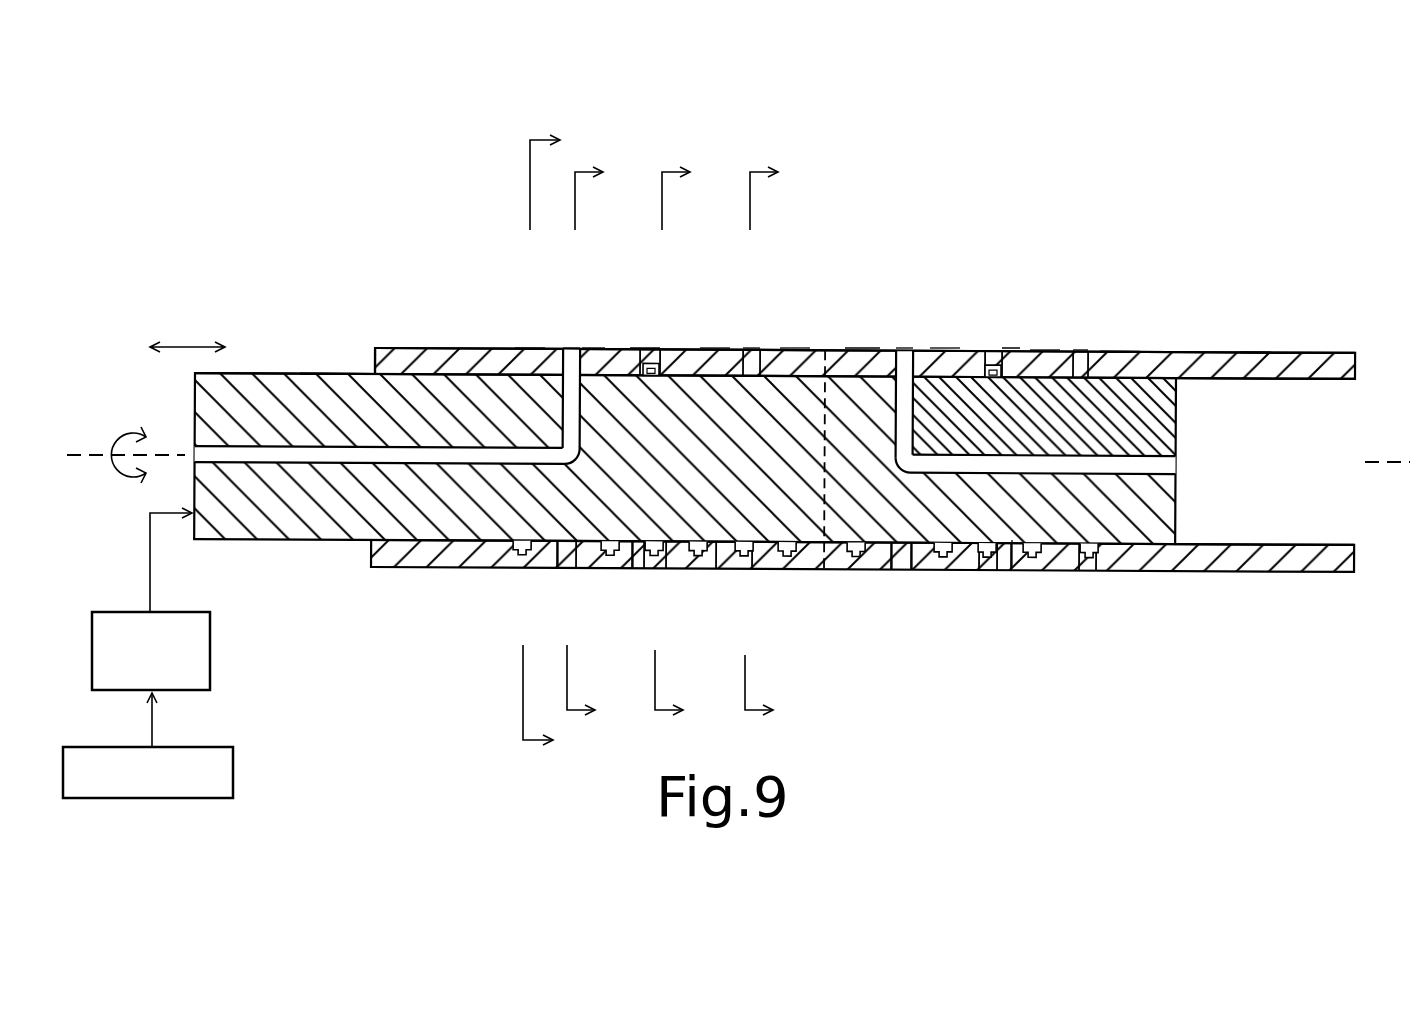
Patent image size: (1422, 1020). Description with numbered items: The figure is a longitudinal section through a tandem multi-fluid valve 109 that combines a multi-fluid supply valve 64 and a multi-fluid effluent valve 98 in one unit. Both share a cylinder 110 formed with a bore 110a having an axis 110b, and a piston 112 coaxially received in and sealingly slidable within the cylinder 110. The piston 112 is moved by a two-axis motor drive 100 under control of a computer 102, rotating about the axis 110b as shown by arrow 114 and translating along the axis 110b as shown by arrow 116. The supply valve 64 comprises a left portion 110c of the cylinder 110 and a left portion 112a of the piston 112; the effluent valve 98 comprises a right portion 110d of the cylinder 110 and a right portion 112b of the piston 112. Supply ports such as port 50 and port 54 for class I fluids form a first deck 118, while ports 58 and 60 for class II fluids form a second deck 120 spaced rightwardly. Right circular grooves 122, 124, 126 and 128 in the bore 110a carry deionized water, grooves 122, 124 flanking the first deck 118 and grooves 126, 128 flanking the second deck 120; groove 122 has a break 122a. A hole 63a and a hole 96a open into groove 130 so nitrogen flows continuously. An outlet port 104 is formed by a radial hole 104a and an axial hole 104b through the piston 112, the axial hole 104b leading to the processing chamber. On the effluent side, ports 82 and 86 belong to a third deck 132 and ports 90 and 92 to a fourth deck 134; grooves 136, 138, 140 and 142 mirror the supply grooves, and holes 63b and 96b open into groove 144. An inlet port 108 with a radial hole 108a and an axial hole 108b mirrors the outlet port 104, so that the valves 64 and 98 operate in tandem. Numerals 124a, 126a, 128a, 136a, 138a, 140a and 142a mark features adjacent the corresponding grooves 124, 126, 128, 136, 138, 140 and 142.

The supply port 50 is at (572, 348).
The supply port 54 is at (548, 567).
The supply port 58 is at (748, 348).
The supply port 60 is at (745, 567).
The hole 63a is at (660, 348).
The hole 63b is at (998, 348).
The multi-fluid supply valve 64 is at (363, 268).
The effluent port 82 is at (905, 348).
The effluent port 86 is at (895, 567).
The effluent port 90 is at (1083, 348).
The effluent port 92 is at (1095, 567).
The hole 96a is at (653, 567).
The hole 96b is at (990, 567).
The multi-fluid effluent valve 98 is at (1263, 295).
The two-axis motor drive 100 is at (212, 650).
The computer 102 is at (235, 777).
The outlet port 104 is at (180, 426).
The radial hole 104a is at (565, 403).
The axial hole 104b is at (195, 458).
The inlet port 108 is at (1203, 482).
The radial hole 108a is at (913, 407).
The axial hole 108b is at (1185, 461).
The tandem multi-fluid valve 109 is at (255, 212).
The cylinder 110 is at (400, 350).
The bore 110a is at (1340, 380).
The axis 110b is at (1340, 547).
The left portion of the cylinder 110c is at (480, 272).
The right portion of the cylinder 110d is at (1326, 315).
The piston 112 is at (297, 372).
The left portion of the piston 112a is at (335, 352).
The right portion of the piston 112b is at (1120, 338).
The arrow 114 is at (125, 433).
The arrow 116 is at (192, 347).
The first deck 118 is at (583, 270).
The second deck 120 is at (762, 270).
The right circular groove 122 is at (520, 558).
The break 122a is at (530, 348).
The right circular groove 124 is at (612, 567).
The electrode 124a is at (592, 348).
The right circular groove 126 is at (698, 567).
The electrode 126a is at (715, 348).
The right circular groove 128 is at (788, 567).
The electrode 128a is at (795, 348).
The right circular groove 130 is at (645, 348).
The third deck 132 is at (903, 278).
The fourth deck 134 is at (1088, 262).
The right circular groove 136 is at (853, 567).
The electrode 136a is at (862, 348).
The right circular groove 138 is at (955, 567).
The electrode 138a is at (945, 348).
The right circular groove 140 is at (1025, 567).
The electrode 140a is at (1043, 348).
The right circular groove 142 is at (1130, 567).
The electrode 142a is at (1130, 352).
The right circular groove 144 is at (1010, 348).